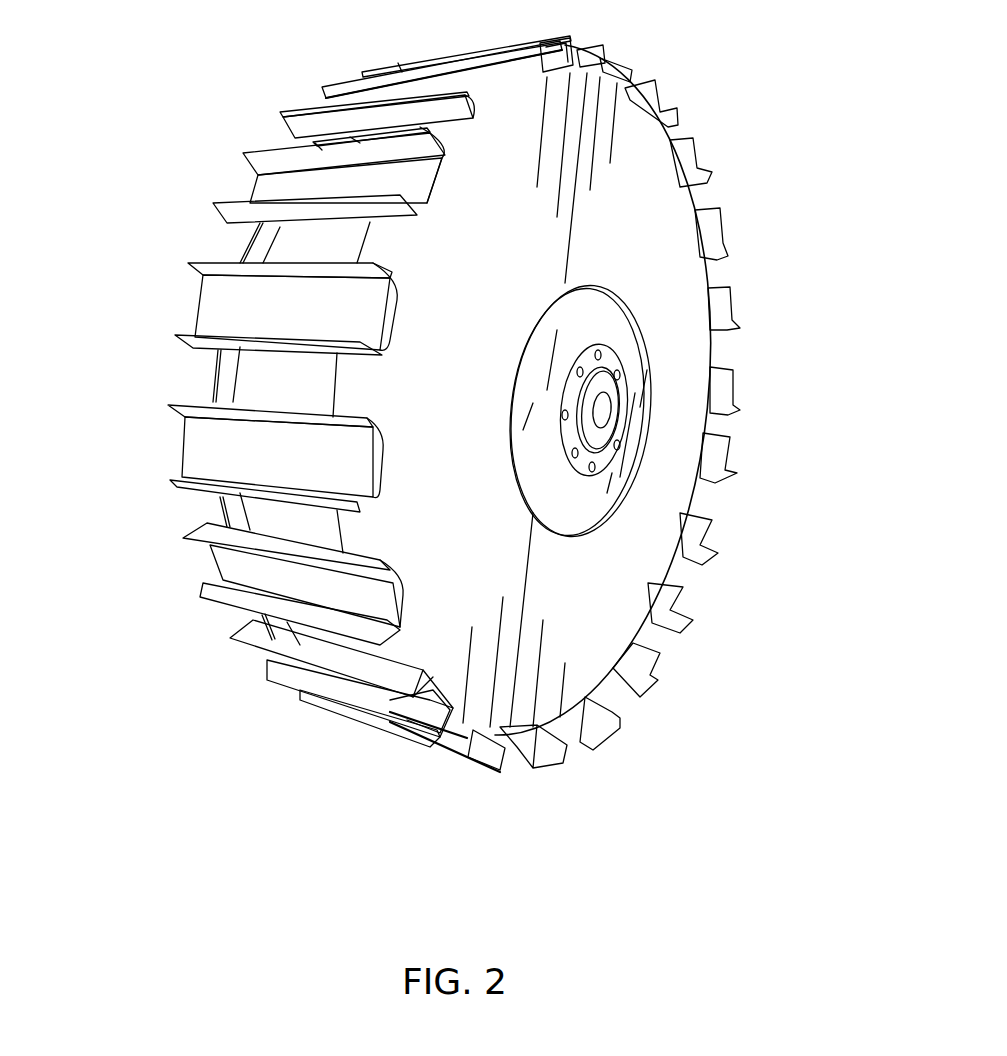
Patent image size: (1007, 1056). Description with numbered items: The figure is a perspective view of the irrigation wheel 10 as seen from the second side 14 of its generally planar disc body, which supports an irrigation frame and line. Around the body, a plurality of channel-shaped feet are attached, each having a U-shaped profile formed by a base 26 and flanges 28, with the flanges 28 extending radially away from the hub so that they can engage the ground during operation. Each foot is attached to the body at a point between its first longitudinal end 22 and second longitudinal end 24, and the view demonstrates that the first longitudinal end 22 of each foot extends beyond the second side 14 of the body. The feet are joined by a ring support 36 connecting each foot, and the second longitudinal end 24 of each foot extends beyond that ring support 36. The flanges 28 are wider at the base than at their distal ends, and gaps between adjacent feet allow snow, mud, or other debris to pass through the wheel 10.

The wheel 10 is at (783, 85).
The second side 14 is at (650, 552).
The first longitudinal end 22 is at (738, 290).
The second longitudinal end 24 is at (200, 307).
The base 26 is at (210, 448).
The flanges 28 is at (203, 478).
The ring support 36 is at (227, 375).